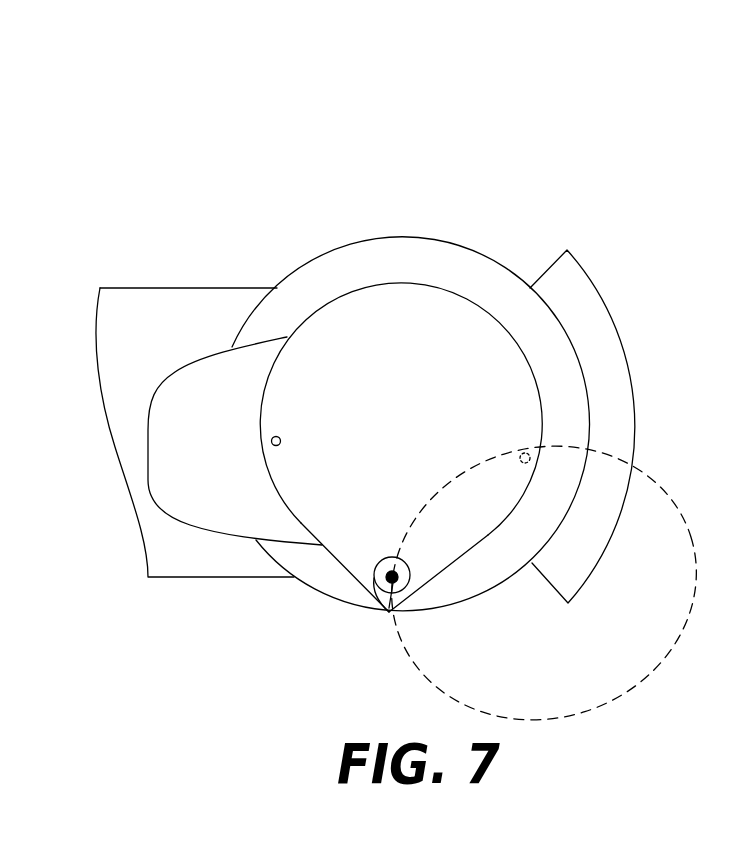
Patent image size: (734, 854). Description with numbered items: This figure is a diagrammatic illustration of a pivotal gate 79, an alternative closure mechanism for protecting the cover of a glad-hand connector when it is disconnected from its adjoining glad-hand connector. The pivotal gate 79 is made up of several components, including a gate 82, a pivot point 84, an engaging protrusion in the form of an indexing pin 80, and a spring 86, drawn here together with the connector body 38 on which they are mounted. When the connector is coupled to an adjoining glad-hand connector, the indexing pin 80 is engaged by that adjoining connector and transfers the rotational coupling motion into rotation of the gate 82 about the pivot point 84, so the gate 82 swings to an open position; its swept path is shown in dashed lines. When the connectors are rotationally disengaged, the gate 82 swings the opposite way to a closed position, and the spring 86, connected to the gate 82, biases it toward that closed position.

The pivotal gate 79 is at (428, 156).
The disc 38 is at (305, 293).
The indexing pin 80 is at (271, 441).
The gate 82 is at (627, 684).
The pivot point 84 is at (376, 612).
The spring 86 is at (379, 562).